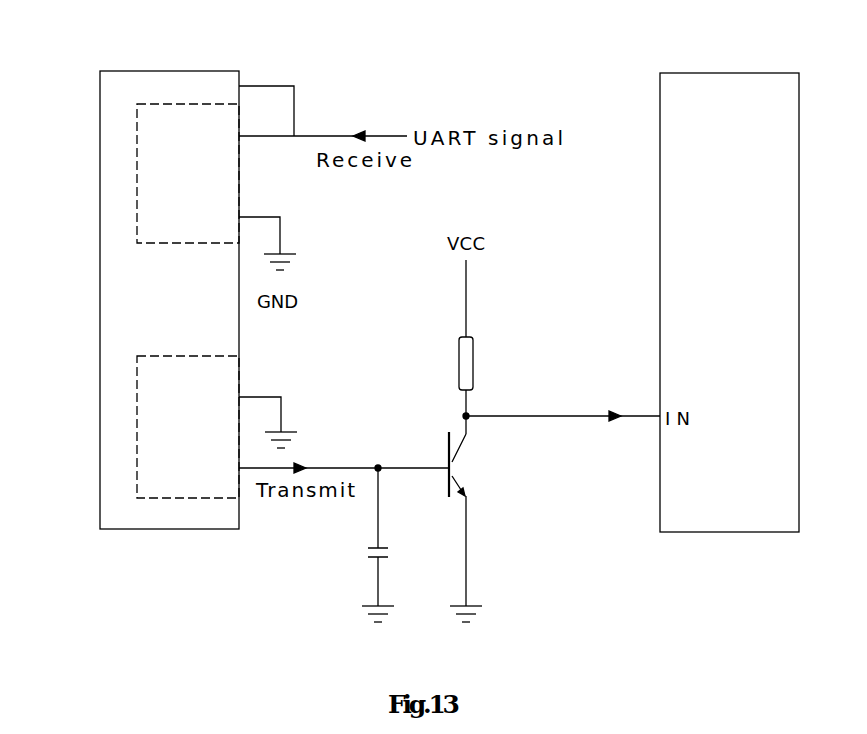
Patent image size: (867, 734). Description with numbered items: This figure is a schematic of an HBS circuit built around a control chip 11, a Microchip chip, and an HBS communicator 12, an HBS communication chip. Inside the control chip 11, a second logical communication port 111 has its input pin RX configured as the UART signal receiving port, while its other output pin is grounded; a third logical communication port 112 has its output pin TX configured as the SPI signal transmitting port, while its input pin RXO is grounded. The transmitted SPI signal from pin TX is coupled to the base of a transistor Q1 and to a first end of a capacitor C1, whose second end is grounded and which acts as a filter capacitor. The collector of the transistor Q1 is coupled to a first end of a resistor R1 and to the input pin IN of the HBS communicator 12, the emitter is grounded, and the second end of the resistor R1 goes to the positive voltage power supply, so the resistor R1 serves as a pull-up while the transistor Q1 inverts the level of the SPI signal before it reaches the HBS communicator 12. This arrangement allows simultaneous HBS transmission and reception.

The control chip 11 is at (170, 71).
The second logical communication port 111 is at (137, 137).
The third logical communication port 112 is at (137, 428).
The HBS communicator 12 is at (730, 73).
The resistor R1 is at (459, 368).
The transistor Q1 is at (458, 473).
The capacitor C1 is at (368, 555).